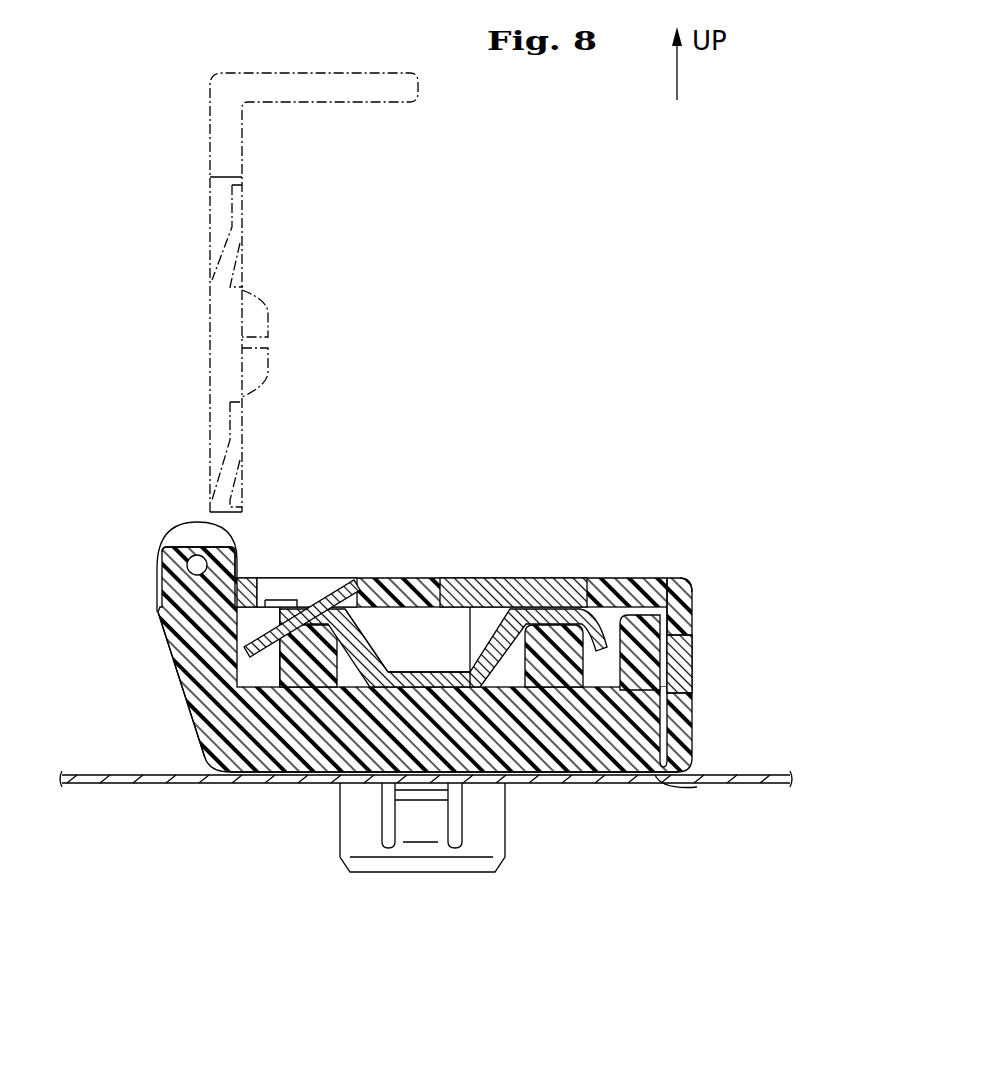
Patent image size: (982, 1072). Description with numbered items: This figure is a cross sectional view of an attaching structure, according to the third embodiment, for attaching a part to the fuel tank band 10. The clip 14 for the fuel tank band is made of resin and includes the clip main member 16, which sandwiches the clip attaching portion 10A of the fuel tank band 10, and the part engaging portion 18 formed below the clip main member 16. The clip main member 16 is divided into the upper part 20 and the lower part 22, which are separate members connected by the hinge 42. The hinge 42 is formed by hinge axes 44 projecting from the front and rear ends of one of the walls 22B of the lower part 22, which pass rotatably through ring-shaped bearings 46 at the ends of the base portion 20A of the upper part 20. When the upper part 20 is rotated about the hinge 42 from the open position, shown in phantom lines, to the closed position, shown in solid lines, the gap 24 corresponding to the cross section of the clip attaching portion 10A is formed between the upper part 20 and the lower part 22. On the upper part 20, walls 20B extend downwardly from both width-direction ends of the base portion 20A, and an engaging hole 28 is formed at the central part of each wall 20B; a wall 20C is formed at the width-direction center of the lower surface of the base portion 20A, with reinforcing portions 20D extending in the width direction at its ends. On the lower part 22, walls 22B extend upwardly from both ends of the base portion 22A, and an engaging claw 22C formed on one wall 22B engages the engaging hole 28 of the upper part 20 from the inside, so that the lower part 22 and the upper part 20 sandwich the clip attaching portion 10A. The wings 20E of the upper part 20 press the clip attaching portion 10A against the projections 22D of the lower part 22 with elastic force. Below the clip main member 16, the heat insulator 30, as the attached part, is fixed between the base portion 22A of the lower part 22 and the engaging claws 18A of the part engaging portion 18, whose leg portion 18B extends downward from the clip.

The fuel tank band 10 is at (356, 609).
The clip attaching portion 10A is at (386, 640).
The clip for the fuel tank band 14 is at (823, 630).
The clip main member 16 is at (787, 607).
The part engaging portion 18 is at (517, 836).
The engaging claws 18A is at (420, 797).
The clip leg 18B is at (507, 780).
The upper part 20 is at (248, 271).
The base portion 20A is at (455, 578).
The walls 20B is at (688, 590).
The wall 20C is at (429, 661).
The reinforcing portions 20D is at (428, 578).
The wings 20E is at (285, 578).
The lower part 22 is at (668, 771).
The base portion 22A is at (273, 772).
The walls 22B is at (173, 663).
The engaging claw 22C is at (678, 670).
The projections 22D is at (597, 628).
The gap 24 is at (470, 647).
The engaging holes 28 is at (683, 641).
The heat insulator 30 is at (137, 783).
The hinge 42 is at (100, 518).
The hinge axes 44 is at (157, 577).
The bearings 46 is at (180, 540).